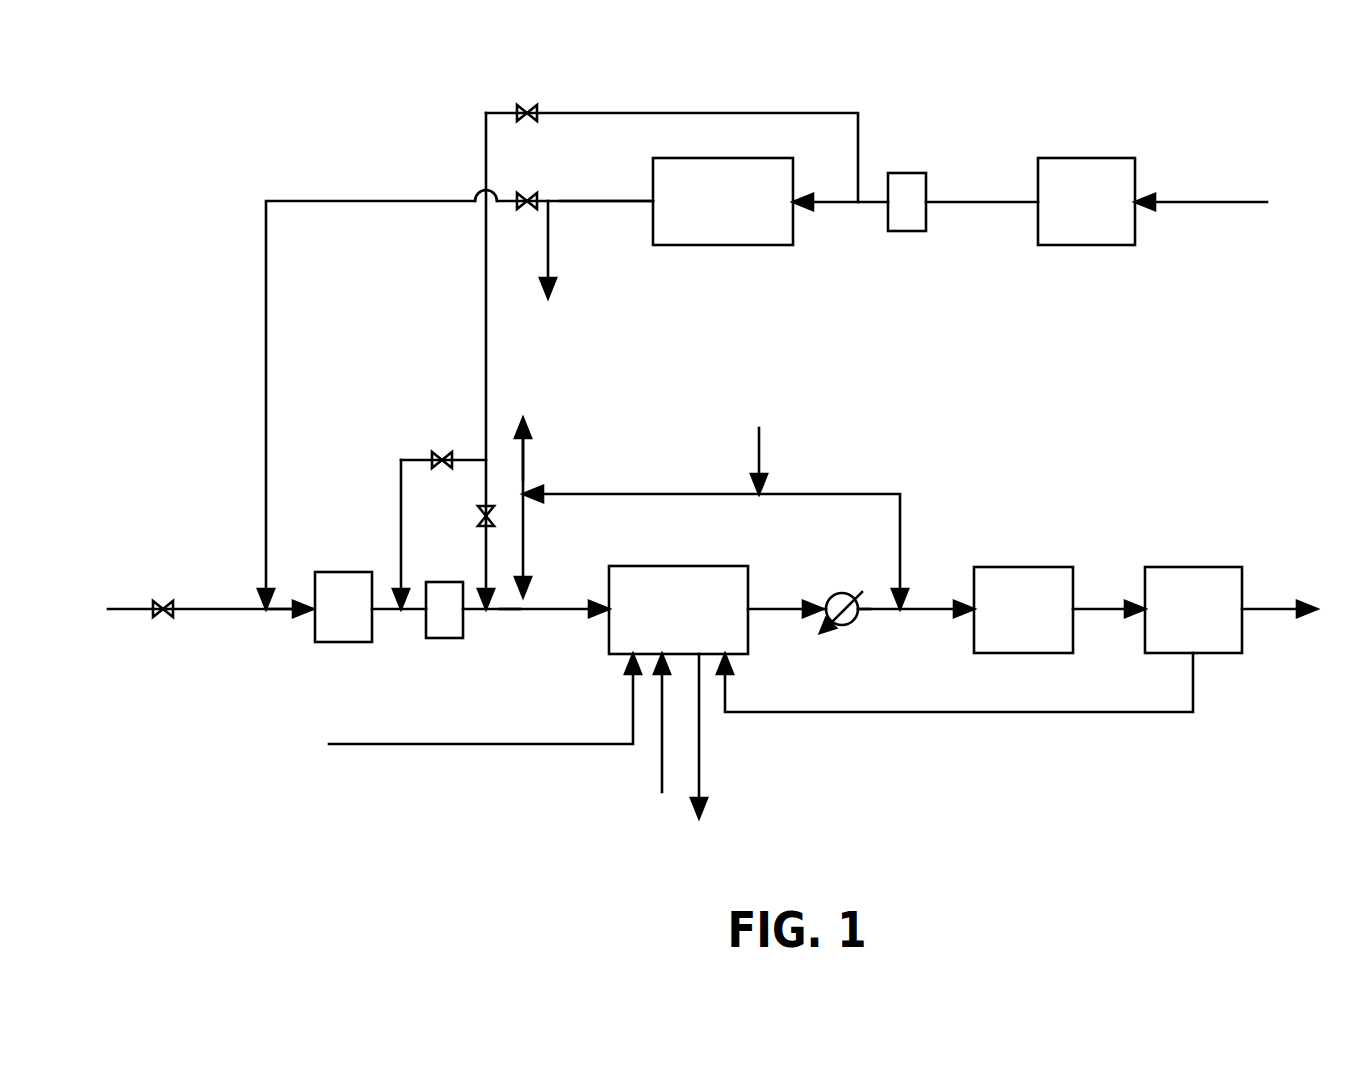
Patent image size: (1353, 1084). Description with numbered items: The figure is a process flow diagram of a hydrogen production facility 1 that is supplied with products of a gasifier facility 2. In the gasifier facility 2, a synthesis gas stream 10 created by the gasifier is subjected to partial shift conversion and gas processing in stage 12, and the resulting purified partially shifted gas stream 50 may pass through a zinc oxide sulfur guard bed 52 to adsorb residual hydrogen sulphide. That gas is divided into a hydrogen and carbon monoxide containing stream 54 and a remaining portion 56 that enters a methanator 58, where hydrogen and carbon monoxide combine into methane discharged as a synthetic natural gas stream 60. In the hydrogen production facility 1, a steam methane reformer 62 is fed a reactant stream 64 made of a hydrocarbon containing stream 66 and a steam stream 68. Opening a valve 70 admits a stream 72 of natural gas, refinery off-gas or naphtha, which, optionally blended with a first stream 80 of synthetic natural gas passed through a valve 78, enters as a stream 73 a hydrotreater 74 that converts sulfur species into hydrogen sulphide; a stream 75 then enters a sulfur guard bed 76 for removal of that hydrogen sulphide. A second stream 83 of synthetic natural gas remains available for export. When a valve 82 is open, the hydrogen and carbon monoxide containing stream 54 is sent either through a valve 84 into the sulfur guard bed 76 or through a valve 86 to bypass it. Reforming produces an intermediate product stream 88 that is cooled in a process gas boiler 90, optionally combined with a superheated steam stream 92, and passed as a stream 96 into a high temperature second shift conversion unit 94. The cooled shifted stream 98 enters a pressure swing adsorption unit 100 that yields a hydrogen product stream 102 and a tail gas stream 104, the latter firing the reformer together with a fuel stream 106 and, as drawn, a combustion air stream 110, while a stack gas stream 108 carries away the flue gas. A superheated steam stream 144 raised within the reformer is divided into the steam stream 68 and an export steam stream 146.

The hydrogen production facility 1 is at (420, 785).
The gasifier facility 2 is at (342, 128).
The synthesis gas stream 10 is at (1193, 185).
The partial shift conversion and gas processing stage 12 is at (1075, 192).
The purified partially shifted gas stream 50 is at (980, 200).
The sulfur guard bed 52 is at (905, 192).
The hydrogen and carbon monoxide containing stream 54 is at (822, 113).
The remaining portion 56 is at (840, 203).
The methanator 58 is at (727, 232).
The synthetic natural gas stream 60 is at (606, 203).
The steam methane reformer 62 is at (676, 558).
The reactant stream 64 is at (545, 605).
The hydrocarbon containing stream 66 is at (507, 612).
The steam stream 68 is at (524, 545).
The valve 70 is at (160, 602).
The stream 72 is at (221, 616).
The stream 73 is at (283, 616).
The hydrotreater 74 is at (340, 597).
The stream 75 is at (413, 605).
The sulfur guard bed 76 is at (436, 620).
The valve 78 is at (530, 195).
The first stream of synthetic natural gas 80 is at (266, 343).
The valve 82 is at (530, 107).
The second stream of synthetic natural gas 83 is at (546, 255).
The valve 84 is at (437, 451).
The valve 86 is at (476, 514).
The intermediate product stream 88 is at (777, 605).
The process gas boiler 90 is at (843, 590).
The superheated steam stream 92 is at (900, 535).
The second shift conversion unit 94 is at (1055, 580).
The stream 96 is at (927, 612).
The cooled shifted stream 98 is at (1100, 607).
The pressure swing adsorption unit 100 is at (1190, 580).
The hydrogen product stream 102 is at (1270, 606).
The tail gas stream 104 is at (1040, 712).
The stream 106 is at (553, 745).
The stack gas stream 108 is at (700, 767).
The combustion air line 110 is at (660, 760).
The superheated steam stream 144 is at (762, 452).
The export steam stream 146 is at (524, 462).